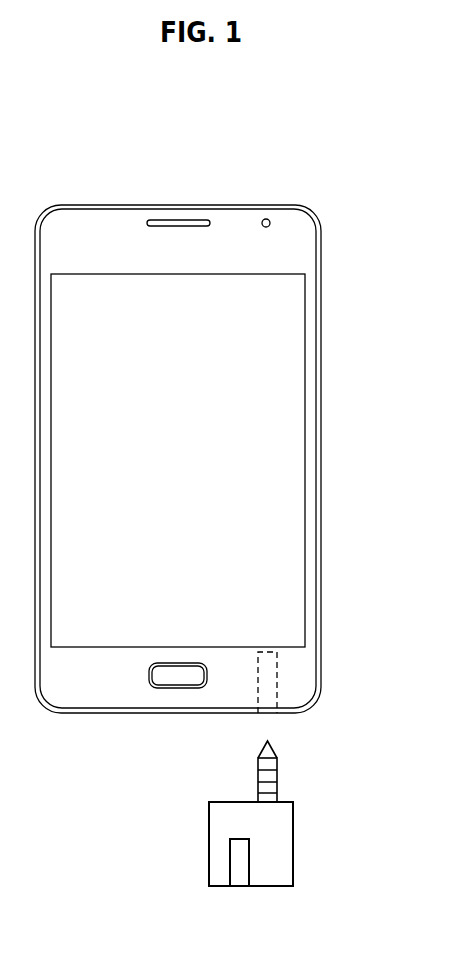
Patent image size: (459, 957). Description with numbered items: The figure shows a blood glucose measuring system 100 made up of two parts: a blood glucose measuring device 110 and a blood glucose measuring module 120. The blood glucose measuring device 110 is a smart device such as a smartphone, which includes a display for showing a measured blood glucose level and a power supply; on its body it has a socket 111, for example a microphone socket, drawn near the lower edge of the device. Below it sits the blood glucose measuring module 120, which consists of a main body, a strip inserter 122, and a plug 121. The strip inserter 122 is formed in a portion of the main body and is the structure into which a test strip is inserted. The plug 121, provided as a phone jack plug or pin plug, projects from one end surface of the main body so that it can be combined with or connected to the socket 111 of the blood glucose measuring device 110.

The blood glucose measuring system 100 is at (201, 116).
The blood glucose measuring device 110 is at (178, 204).
The socket 111 is at (277, 681).
The blood glucose measuring module 120 is at (208, 844).
The plug 121 is at (278, 782).
The strip inserter 122 is at (249, 860).